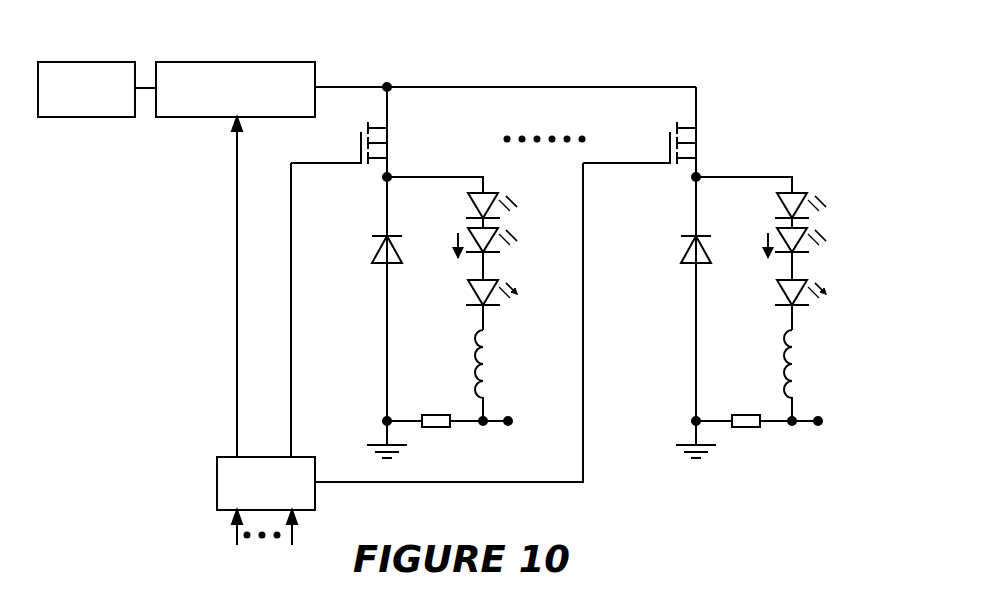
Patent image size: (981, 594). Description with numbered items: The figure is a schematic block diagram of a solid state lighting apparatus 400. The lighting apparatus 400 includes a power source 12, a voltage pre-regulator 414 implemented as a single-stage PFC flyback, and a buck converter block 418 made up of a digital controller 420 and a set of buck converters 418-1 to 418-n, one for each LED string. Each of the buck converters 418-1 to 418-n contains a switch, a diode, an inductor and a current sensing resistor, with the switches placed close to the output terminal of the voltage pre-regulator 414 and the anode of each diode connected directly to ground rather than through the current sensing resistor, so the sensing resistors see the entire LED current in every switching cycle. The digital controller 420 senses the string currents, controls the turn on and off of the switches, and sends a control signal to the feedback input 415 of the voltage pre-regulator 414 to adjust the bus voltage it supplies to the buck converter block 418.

The power source 12 is at (87, 62).
The voltage pre-regulator 414 is at (238, 62).
The feedback input 415 is at (233, 123).
The buck converter block 418 is at (553, 64).
The buck converter 418-1 is at (378, 270).
The buck converter 418-n is at (687, 270).
The digital controller 420 is at (217, 481).
The lighting apparatus 400 is at (712, 49).